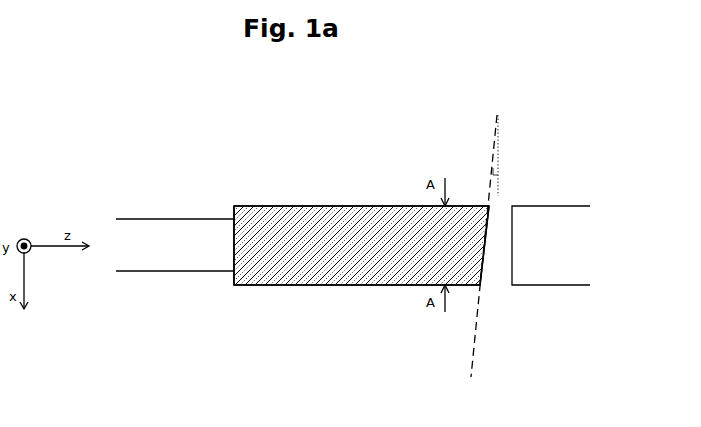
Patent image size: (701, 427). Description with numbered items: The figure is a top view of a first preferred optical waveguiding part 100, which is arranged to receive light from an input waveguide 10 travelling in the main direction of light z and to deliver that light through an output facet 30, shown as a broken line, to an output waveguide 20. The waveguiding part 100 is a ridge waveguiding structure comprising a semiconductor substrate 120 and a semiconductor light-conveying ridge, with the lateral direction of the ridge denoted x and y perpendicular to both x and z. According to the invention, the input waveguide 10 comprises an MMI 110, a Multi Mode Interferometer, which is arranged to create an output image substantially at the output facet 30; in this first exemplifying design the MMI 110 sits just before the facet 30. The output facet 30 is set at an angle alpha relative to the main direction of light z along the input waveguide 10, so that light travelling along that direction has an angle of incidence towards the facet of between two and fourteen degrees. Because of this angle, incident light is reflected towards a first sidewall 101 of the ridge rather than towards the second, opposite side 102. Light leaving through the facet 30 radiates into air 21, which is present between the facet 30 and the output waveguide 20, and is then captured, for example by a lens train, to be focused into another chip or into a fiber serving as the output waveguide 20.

The input waveguide 10 is at (175, 245).
The output waveguide 20 is at (551, 245).
The air 21 is at (492, 282).
The output facet 30 is at (489, 246).
The optical waveguiding part 100 is at (207, 157).
The first sidewall 101 is at (350, 206).
The second, opposite side 102 is at (336, 285).
The MMI 110 is at (356, 251).
The semiconductor substrate 120 is at (247, 227).